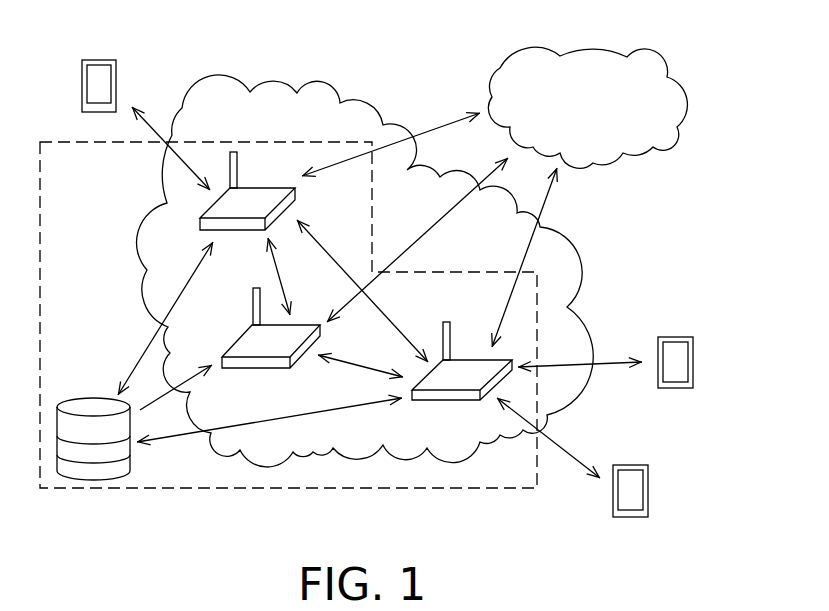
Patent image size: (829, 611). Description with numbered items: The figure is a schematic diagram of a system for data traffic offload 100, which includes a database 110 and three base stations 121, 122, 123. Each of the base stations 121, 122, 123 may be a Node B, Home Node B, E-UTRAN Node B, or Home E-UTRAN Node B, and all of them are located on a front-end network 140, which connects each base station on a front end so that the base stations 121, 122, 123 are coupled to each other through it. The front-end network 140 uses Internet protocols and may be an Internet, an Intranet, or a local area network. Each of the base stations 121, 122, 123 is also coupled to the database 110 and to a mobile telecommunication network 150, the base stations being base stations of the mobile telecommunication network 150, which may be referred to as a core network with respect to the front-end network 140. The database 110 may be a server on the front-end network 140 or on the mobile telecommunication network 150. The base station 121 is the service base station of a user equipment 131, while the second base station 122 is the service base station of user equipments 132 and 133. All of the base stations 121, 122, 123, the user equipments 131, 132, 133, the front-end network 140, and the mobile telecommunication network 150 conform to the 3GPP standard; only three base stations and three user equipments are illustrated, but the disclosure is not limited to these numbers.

The system for data traffic offload 100 is at (373, 488).
The database 110 is at (92, 398).
The base station 121 is at (298, 193).
The second base station 122 is at (453, 396).
The base station 123 is at (323, 335).
The user equipment 131 is at (98, 60).
The user equipment 132 is at (675, 337).
The user equipment 133 is at (630, 465).
The front-end network 140 is at (322, 78).
The mobile telecommunication network 150 is at (647, 43).